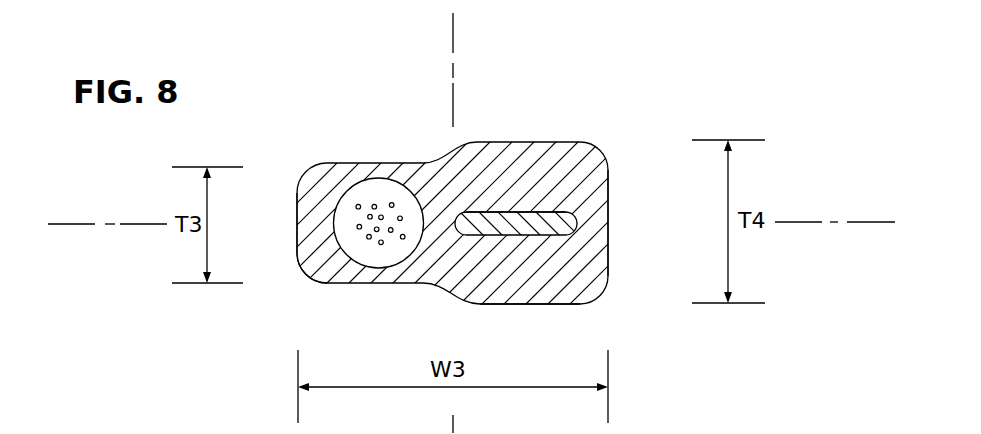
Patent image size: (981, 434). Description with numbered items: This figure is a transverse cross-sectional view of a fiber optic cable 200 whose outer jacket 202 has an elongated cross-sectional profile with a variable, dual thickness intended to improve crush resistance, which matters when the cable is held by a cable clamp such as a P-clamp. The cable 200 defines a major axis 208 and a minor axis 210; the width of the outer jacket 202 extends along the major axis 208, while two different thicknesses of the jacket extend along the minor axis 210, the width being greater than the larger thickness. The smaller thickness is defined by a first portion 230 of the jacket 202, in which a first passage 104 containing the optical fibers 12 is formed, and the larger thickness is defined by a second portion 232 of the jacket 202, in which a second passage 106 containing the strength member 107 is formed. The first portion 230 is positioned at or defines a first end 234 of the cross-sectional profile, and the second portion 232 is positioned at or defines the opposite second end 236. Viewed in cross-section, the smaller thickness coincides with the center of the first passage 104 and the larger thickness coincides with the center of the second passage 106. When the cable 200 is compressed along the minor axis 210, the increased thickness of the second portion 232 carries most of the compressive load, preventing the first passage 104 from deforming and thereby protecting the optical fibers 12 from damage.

The optical fibers 12 is at (392, 203).
The first passage 104 is at (353, 185).
The second passage 106 is at (563, 212).
The strength member 107 is at (535, 223).
The cable 200 is at (651, 83).
The outer jacket 202 is at (607, 237).
The major axis 208 is at (63, 224).
The minor axis 210 is at (455, 38).
The first portion 230 is at (304, 253).
The second portion 232 is at (567, 305).
The first end 234 is at (297, 232).
The second end 236 is at (607, 262).